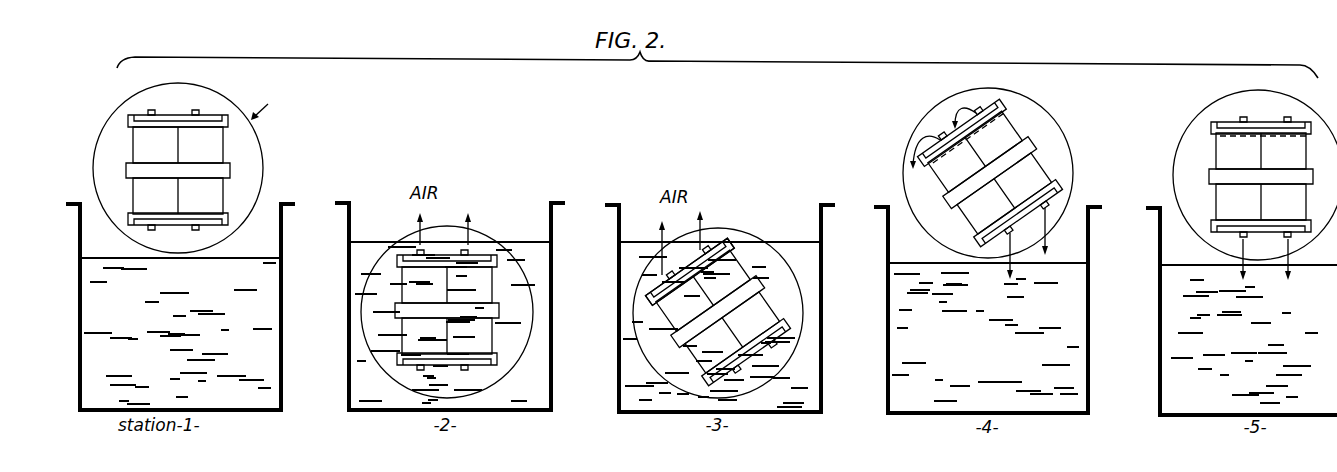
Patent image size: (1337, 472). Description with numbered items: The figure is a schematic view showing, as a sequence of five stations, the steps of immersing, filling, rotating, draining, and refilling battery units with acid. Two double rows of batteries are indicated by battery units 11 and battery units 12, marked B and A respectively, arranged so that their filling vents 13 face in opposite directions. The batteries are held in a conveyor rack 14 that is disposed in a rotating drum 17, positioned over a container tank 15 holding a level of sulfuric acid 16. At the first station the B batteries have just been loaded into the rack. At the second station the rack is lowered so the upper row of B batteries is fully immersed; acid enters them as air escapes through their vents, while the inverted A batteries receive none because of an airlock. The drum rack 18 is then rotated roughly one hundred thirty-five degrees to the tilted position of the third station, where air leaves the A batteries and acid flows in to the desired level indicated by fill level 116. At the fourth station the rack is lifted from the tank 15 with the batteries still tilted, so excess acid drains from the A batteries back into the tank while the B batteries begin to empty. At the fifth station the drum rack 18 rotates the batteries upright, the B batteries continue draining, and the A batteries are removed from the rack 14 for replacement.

The battery units 11 is at (135, 143).
The battery units 12 is at (133, 193).
The filling vents 13 is at (196, 110).
The conveyor rack 14 is at (230, 172).
The container tank 15 is at (283, 242).
The sulfuric acid 16 is at (260, 320).
The rotating drum 17 is at (266, 104).
The drum rack 18 is at (263, 153).
The fill level 116 is at (736, 250).